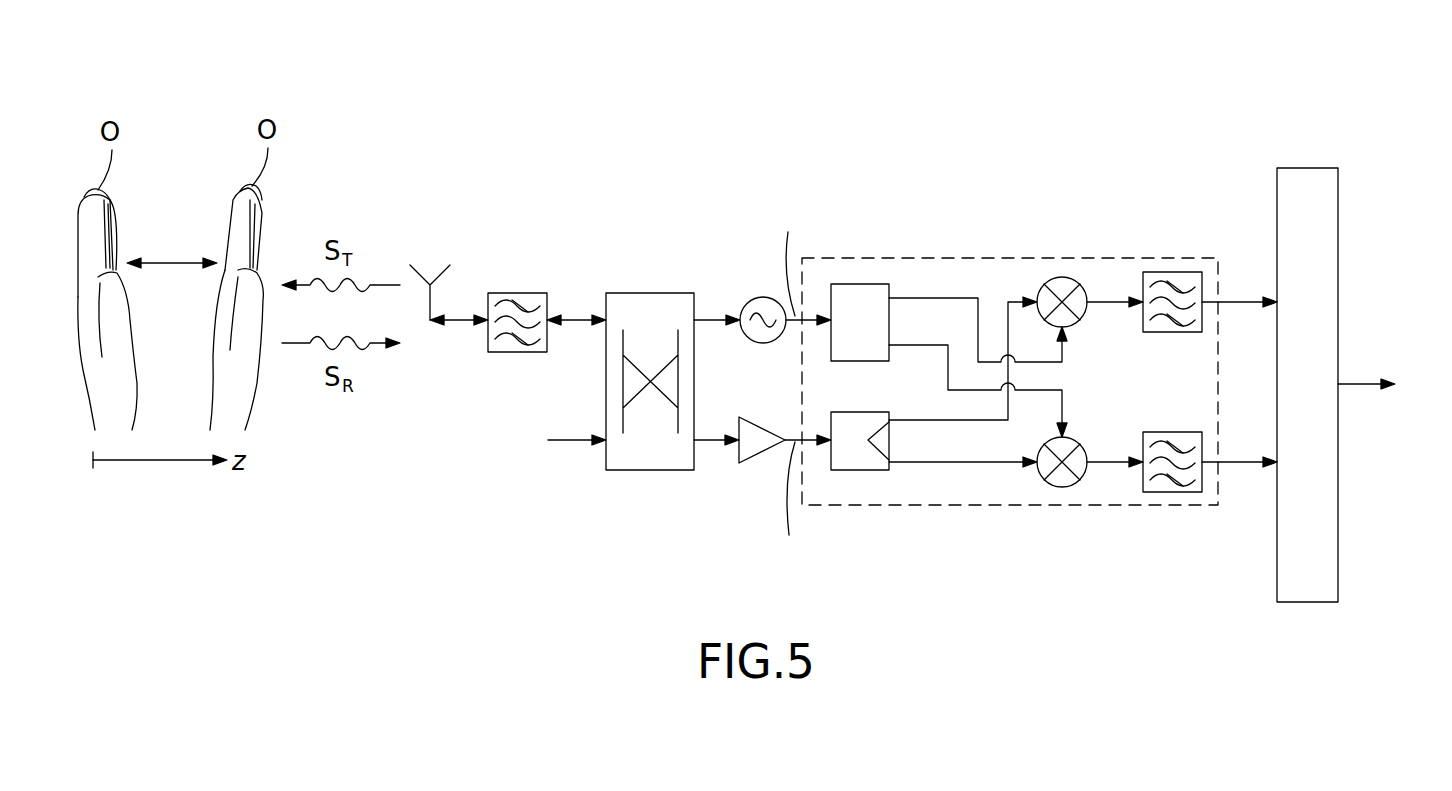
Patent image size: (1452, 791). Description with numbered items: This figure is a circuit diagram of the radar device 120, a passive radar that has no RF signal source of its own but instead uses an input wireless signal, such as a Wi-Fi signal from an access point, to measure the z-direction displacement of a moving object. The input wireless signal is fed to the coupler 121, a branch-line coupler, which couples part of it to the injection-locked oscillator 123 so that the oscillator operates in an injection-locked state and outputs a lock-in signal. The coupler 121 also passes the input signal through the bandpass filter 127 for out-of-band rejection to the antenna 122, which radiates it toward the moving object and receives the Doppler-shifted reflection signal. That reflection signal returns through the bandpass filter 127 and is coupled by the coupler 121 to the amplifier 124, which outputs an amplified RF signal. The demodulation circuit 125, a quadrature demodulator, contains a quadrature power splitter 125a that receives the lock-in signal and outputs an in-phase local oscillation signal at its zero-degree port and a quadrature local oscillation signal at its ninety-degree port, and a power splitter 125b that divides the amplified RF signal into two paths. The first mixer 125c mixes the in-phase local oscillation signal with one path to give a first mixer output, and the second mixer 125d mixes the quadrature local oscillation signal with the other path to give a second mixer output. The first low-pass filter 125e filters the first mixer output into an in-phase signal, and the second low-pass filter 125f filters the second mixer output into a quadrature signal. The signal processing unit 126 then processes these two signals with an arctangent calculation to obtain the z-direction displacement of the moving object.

The radar device 120 is at (1150, 125).
The coupler 121 is at (638, 293).
The antenna 122 is at (422, 273).
The injection-locked oscillator 123 is at (745, 303).
The amplifier 124 is at (757, 462).
The demodulation circuit 125 is at (980, 258).
The quadrature power splitter 125a is at (872, 284).
The power splitter 125b is at (872, 470).
The first mixer 125c is at (1062, 277).
The second mixer 125d is at (1062, 487).
The first low-pass filter 125e is at (1190, 272).
The second low-pass filter 125f is at (1190, 492).
The signal processing unit 126 is at (1303, 168).
The bandpass filter 127 is at (503, 293).